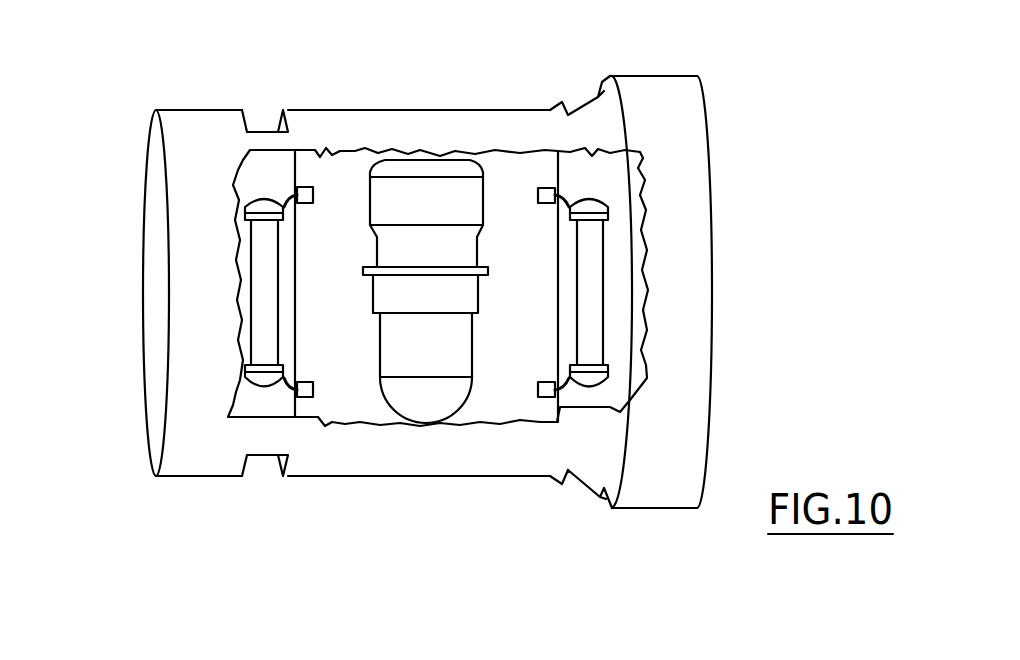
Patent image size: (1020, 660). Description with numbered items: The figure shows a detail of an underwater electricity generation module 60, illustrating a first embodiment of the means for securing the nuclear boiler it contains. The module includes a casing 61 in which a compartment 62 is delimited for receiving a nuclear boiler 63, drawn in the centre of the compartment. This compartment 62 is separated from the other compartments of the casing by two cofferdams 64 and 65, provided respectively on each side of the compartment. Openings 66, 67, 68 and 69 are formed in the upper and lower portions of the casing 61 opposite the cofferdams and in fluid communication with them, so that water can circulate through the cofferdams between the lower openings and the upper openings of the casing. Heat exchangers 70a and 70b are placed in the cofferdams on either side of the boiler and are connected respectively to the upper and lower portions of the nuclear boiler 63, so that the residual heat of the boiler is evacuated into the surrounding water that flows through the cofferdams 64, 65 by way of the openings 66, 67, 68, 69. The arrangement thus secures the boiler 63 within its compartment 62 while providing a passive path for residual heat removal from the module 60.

The underwater electricity generation module 60 is at (720, 110).
The casing 61 is at (358, 88).
The compartment 62 is at (368, 488).
The nuclear boiler 63 is at (436, 188).
The cofferdam 64 is at (270, 470).
The cofferdam 65 is at (586, 478).
The opening 66 is at (263, 112).
The opening 67 is at (212, 485).
The opening 68 is at (585, 76).
The opening 69 is at (563, 490).
The heat exchanger 70a is at (244, 291).
The heat exchanger 70b is at (604, 290).